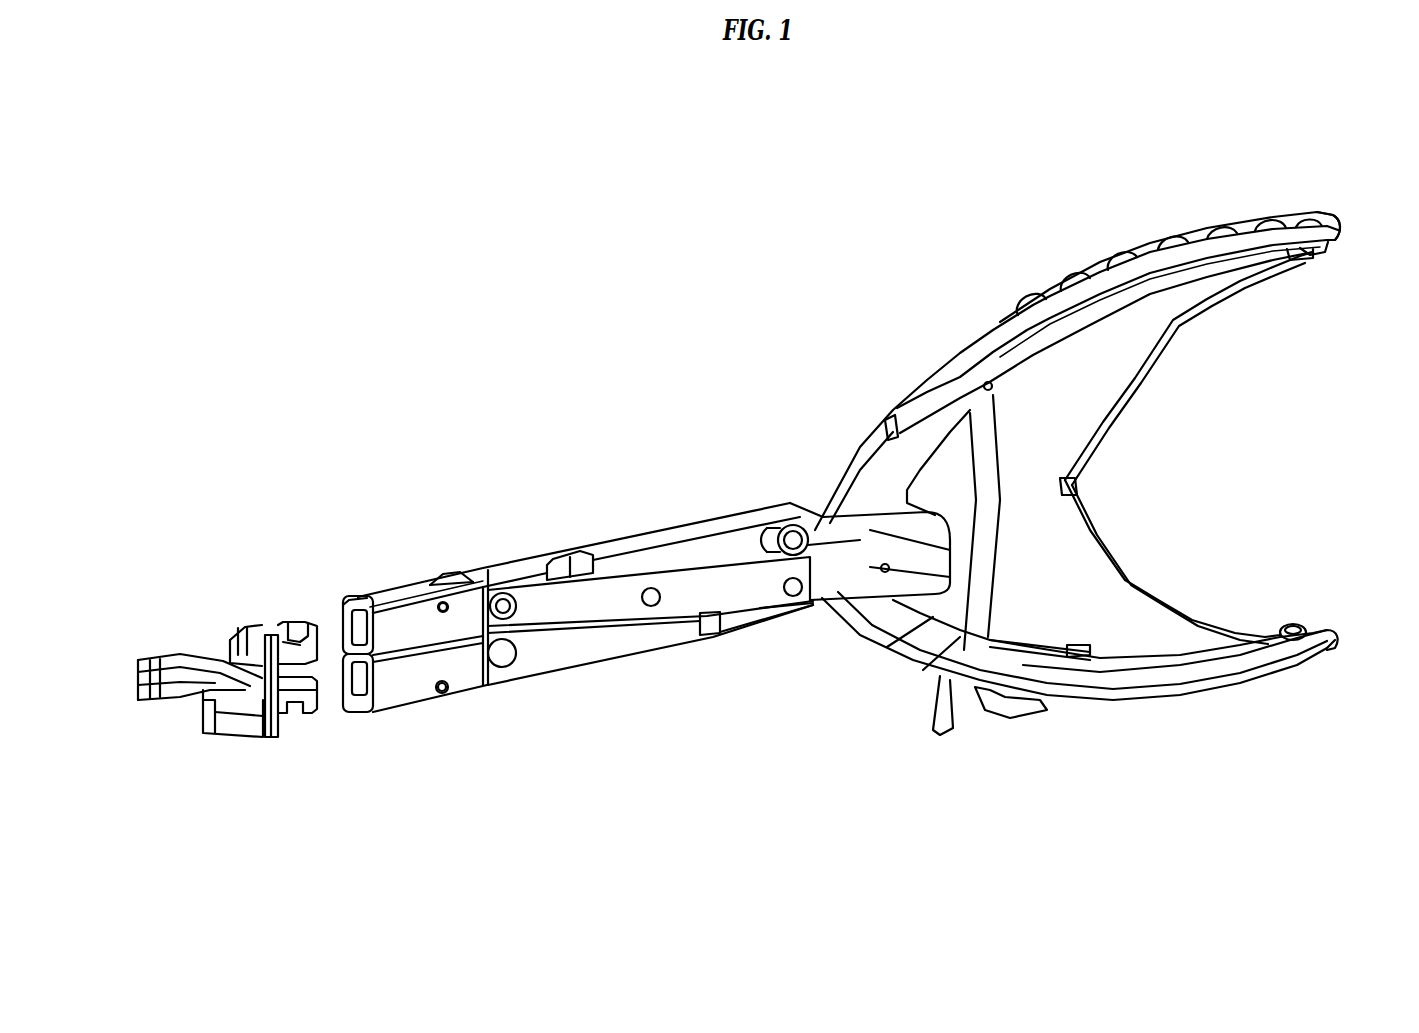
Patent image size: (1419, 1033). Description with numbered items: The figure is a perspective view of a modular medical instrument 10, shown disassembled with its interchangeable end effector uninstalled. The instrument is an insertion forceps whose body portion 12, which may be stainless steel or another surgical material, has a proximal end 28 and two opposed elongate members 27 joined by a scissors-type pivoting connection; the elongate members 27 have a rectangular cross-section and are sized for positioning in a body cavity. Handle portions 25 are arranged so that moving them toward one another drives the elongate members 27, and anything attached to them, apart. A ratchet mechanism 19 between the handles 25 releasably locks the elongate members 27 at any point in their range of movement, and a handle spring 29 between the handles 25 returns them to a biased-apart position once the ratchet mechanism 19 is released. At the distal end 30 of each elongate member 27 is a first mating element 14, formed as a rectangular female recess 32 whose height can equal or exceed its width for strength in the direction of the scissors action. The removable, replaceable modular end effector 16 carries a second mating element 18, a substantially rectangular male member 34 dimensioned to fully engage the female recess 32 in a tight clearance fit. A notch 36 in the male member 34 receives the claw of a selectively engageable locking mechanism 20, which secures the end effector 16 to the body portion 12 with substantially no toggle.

The modular medical instrument 10 is at (479, 258).
The body portion 12 is at (371, 780).
The first mating element 14 is at (357, 605).
The modular end effector 16 is at (225, 753).
The second mating element 18 is at (301, 727).
The ratchet mechanism 19 is at (975, 712).
The locking mechanism 20 is at (447, 575).
The handle portions 25 is at (1095, 272).
The elongate members 27 is at (618, 538).
The proximal end 28 is at (1338, 190).
The handle spring 29 is at (1113, 410).
The distal end 30 is at (347, 585).
The female recess 32 is at (343, 690).
The male member 34 is at (318, 632).
The notch 36 is at (285, 632).